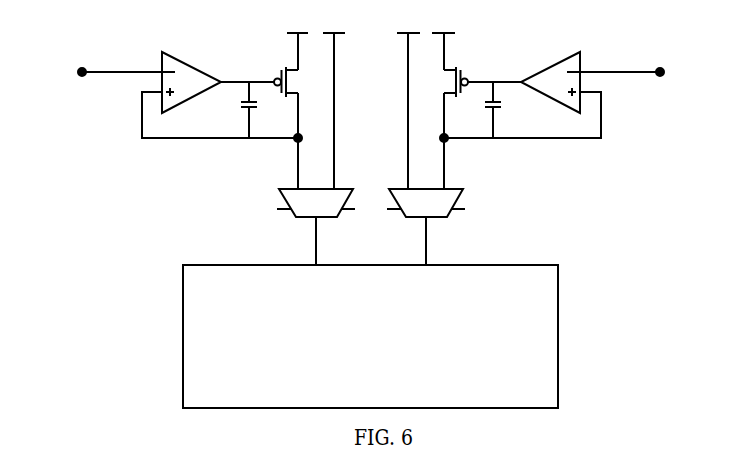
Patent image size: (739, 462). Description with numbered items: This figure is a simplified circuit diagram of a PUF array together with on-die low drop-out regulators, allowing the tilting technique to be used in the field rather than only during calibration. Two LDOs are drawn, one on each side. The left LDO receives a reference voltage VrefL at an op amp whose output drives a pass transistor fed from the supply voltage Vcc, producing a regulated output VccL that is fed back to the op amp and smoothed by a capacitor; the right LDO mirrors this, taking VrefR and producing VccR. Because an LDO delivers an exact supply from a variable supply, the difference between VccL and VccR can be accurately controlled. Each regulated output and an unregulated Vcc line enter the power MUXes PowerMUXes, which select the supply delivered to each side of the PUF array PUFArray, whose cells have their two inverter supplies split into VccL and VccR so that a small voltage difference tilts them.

The left reference voltage VrefL is at (107, 58).
The right reference voltage VrefR is at (634, 58).
The supply voltage Vcc is at (371, 97).
The left inverter supply voltage VccL is at (269, 151).
The right inverter supply voltage VccR is at (472, 151).
The power multiplexers PowerMUXes is at (371, 227).
The PUF array PUFArray is at (370, 336).